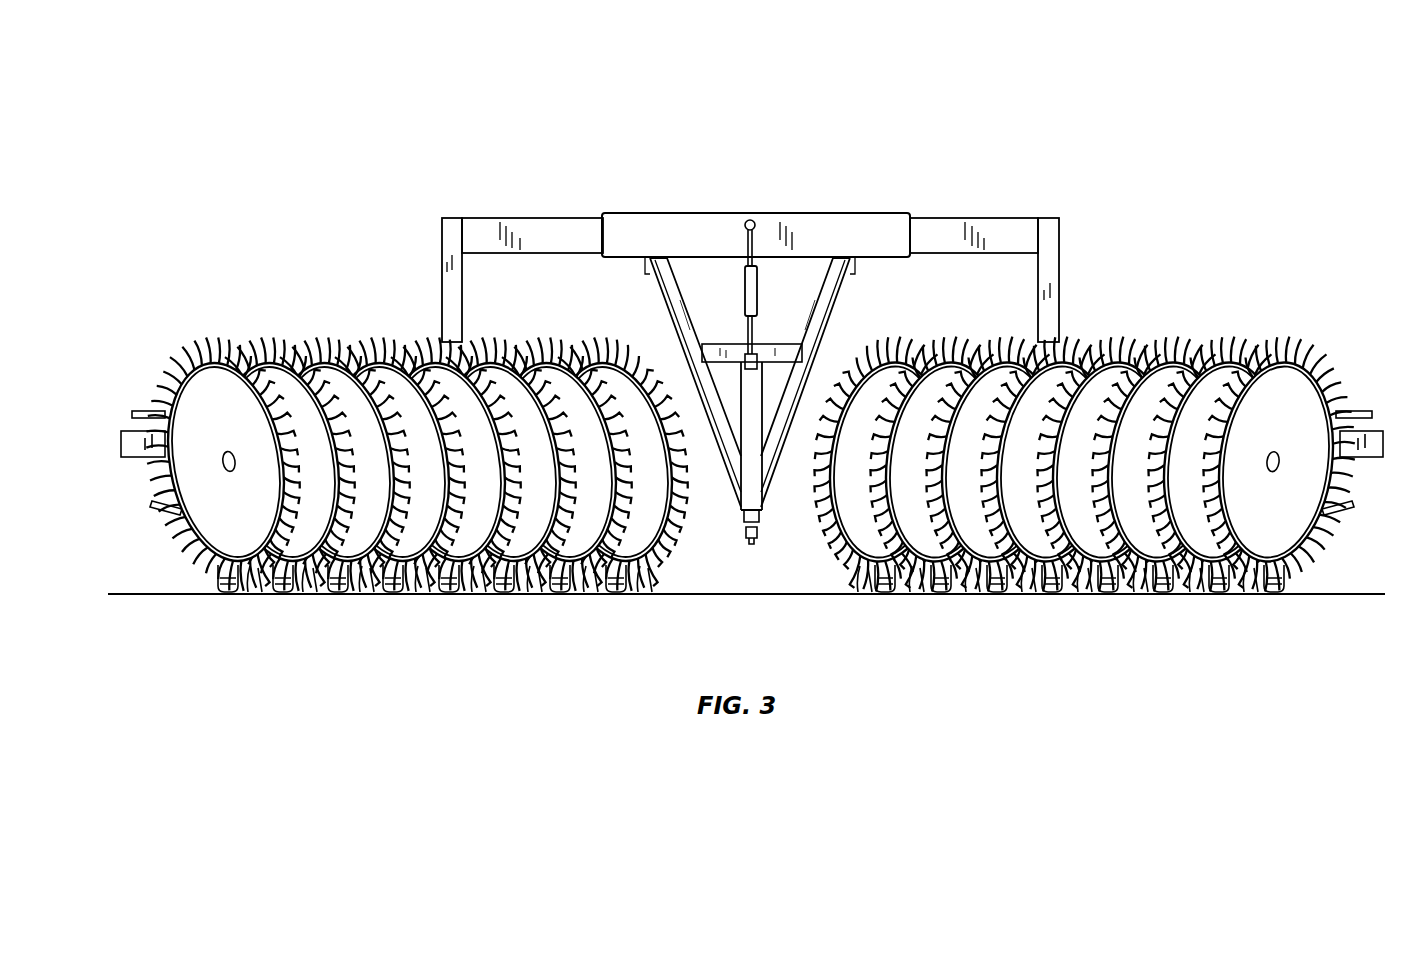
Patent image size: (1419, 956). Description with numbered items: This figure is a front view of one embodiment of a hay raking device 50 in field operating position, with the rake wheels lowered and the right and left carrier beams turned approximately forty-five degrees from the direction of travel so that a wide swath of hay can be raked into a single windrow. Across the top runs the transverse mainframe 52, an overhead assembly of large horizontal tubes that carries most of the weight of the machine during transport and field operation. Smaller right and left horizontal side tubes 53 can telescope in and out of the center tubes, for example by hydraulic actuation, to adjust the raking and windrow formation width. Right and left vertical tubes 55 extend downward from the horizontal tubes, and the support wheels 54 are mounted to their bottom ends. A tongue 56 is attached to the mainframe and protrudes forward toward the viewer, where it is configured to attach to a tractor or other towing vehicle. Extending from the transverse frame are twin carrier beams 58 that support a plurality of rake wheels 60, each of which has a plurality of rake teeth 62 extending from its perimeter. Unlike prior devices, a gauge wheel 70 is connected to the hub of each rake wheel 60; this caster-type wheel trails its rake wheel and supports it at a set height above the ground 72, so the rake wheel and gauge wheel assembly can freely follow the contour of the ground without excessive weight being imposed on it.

The hay raking device 50 is at (440, 115).
The transverse mainframe 52 is at (805, 232).
The horizontal side tubes 53 is at (557, 236).
The support wheels 54 is at (478, 597).
The vertical tubes 55 is at (450, 284).
The tongue 56 is at (740, 530).
The carrier beams 58 is at (138, 458).
The rake wheels 60 is at (388, 385).
The rake teeth 62 is at (538, 336).
The gauge wheel 70 is at (278, 597).
The ground 72 is at (758, 593).